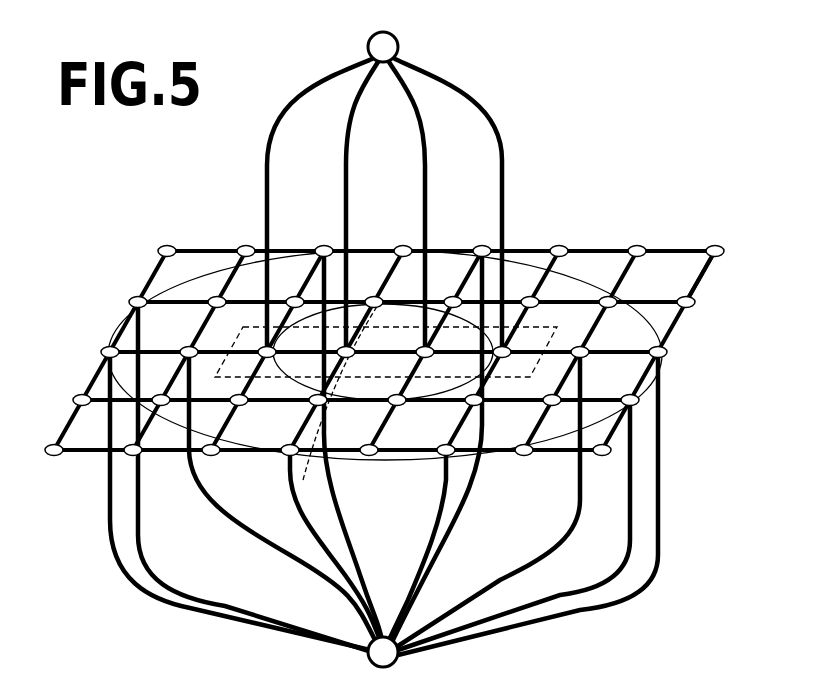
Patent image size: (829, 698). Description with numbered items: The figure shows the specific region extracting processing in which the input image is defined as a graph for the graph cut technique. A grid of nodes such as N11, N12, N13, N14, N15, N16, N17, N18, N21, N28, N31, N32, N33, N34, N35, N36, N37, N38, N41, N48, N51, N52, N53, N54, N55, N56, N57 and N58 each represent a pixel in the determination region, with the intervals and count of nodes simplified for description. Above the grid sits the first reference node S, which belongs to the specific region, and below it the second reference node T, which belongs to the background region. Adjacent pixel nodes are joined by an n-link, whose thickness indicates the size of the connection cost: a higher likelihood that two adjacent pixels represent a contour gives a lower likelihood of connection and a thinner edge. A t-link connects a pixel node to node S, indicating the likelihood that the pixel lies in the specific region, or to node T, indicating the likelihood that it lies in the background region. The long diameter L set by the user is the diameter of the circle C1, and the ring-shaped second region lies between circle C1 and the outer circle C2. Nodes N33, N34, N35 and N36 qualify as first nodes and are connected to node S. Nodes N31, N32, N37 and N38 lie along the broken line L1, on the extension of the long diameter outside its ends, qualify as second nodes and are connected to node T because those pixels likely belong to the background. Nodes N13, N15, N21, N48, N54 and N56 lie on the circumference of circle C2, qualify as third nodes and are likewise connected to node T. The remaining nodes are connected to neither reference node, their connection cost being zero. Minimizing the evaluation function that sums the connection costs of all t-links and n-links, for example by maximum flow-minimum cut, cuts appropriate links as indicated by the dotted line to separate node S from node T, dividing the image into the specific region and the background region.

The first reference node S is at (383, 47).
The second reference node T is at (383, 652).
The element t-link is at (470, 95).
The element n-link is at (708, 279).
The long diameter L is at (337, 403).
The broken line L1 is at (116, 319).
The circle C1 is at (455, 400).
The circle C2 is at (388, 463).
The node N11 is at (155, 242).
The node N12 is at (245, 242).
The node N13 is at (324, 242).
The node N14 is at (403, 242).
The node N15 is at (482, 242).
The node N16 is at (559, 242).
The node N17 is at (637, 242).
The node N18 is at (715, 242).
The node N21 is at (118, 300).
The node N28 is at (675, 293).
The node N31 is at (90, 350).
The node N32 is at (189, 339).
The node N33 is at (272, 369).
The node N34 is at (332, 339).
The node N35 is at (410, 339).
The node N36 is at (486, 339).
The node N37 is at (569, 339).
The node N38 is at (655, 339).
The node N41 is at (62, 400).
The node N48 is at (638, 415).
The node N51 is at (34, 449).
The node N52 is at (123, 439).
The node N53 is at (201, 439).
The node N54 is at (277, 439).
The node N55 is at (355, 439).
The node N56 is at (432, 439).
The node N57 is at (527, 464).
The node N58 is at (611, 464).